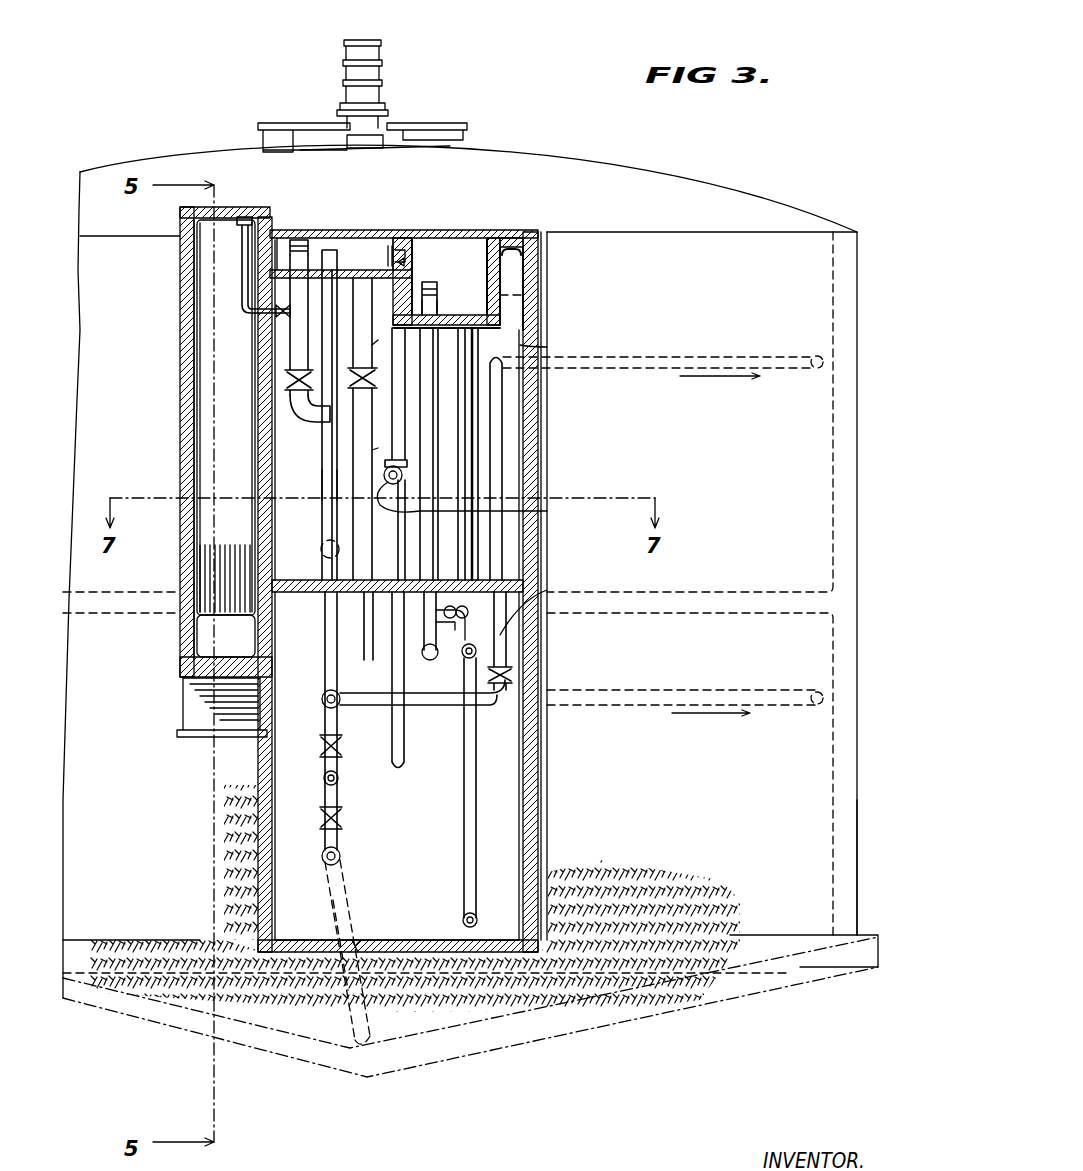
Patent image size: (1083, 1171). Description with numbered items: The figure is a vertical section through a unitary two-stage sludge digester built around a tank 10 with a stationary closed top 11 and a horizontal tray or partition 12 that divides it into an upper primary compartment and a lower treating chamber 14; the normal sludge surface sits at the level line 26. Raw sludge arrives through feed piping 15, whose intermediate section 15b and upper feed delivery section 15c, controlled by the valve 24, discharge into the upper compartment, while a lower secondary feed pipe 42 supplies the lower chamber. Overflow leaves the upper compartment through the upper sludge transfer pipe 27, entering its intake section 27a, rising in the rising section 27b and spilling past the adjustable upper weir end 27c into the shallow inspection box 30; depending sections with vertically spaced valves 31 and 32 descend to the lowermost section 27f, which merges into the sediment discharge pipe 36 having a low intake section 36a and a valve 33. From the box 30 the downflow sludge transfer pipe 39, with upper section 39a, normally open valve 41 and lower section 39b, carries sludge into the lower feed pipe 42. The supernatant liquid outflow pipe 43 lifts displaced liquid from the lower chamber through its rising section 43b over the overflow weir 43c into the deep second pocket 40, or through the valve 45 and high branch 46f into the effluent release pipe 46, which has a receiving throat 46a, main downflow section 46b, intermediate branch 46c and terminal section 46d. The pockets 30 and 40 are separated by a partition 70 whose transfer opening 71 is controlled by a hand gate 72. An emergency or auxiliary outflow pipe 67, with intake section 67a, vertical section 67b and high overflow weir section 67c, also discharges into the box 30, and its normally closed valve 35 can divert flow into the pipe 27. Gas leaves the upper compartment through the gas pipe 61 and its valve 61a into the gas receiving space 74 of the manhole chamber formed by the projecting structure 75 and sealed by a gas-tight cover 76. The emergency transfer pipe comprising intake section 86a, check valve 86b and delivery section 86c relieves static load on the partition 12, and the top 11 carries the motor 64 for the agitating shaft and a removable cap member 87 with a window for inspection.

The tank 10 is at (72, 339).
The closed top 11 is at (650, 167).
The horizontal tray or partition 12 is at (714, 594).
The lower treating chamber 14 is at (798, 818).
The feed piping 15 is at (608, 440).
The intermediate section 15b is at (322, 705).
The upper feed delivery section 15c is at (478, 440).
The valve 24 is at (515, 676).
The normal liquid surface level line 26 is at (194, 305).
The upper sludge transfer pipe 27 is at (295, 505).
The intake section 27a is at (272, 535).
The rising section 27b is at (270, 498).
The upper weir end 27c is at (328, 250).
The lowermost depending section 27f is at (320, 835).
The inspection box or transfer pocket 30 is at (341, 258).
The valve 31 is at (342, 744).
The valve 32 is at (340, 815).
The valve 33 is at (322, 856).
The valve 35 is at (300, 368).
The sediment discharge pipe 36 is at (390, 885).
The low intake section 36a is at (352, 897).
The downflow sludge transfer pipe 39 is at (391, 423).
The upper section 39a is at (372, 340).
The lower section 39b is at (372, 452).
The second inspection or transfer pocket 40 is at (478, 238).
The valve 41 is at (376, 379).
The lower secondary feed pipe 42 is at (739, 694).
The supernatant liquid outflow pipe 43 is at (422, 645).
The rising section 43b is at (438, 380).
The overflow weir 43c is at (443, 282).
The valve 45 is at (470, 618).
The effluent release pipe 46 is at (608, 345).
The receiving throat 46a is at (468, 322).
The main downflow section 46b is at (440, 360).
The intermediate branch 46c is at (478, 651).
The terminal section 46d is at (462, 814).
The high branch 46f is at (547, 600).
The gas outflow pipe 61 is at (241, 249).
The valve 61a is at (270, 313).
The motor 64 is at (382, 42).
The emergency or auxiliary outflow pipe 67 is at (270, 430).
The intake section 67a is at (272, 320).
The vertical section 67b is at (280, 420).
The high overflow weir section 67c is at (299, 240).
The partition 70 is at (400, 250).
The transfer opening 71 is at (408, 256).
The valve or gate 72 is at (388, 246).
The gas receiving space 74 is at (200, 276).
The projecting structure 75 is at (180, 384).
The gas-tight cover 76 is at (232, 207).
The intake section 86a is at (410, 497).
The relief or check valve 86b is at (547, 511).
The delivery section 86c is at (404, 735).
The cap member 87 is at (412, 132).